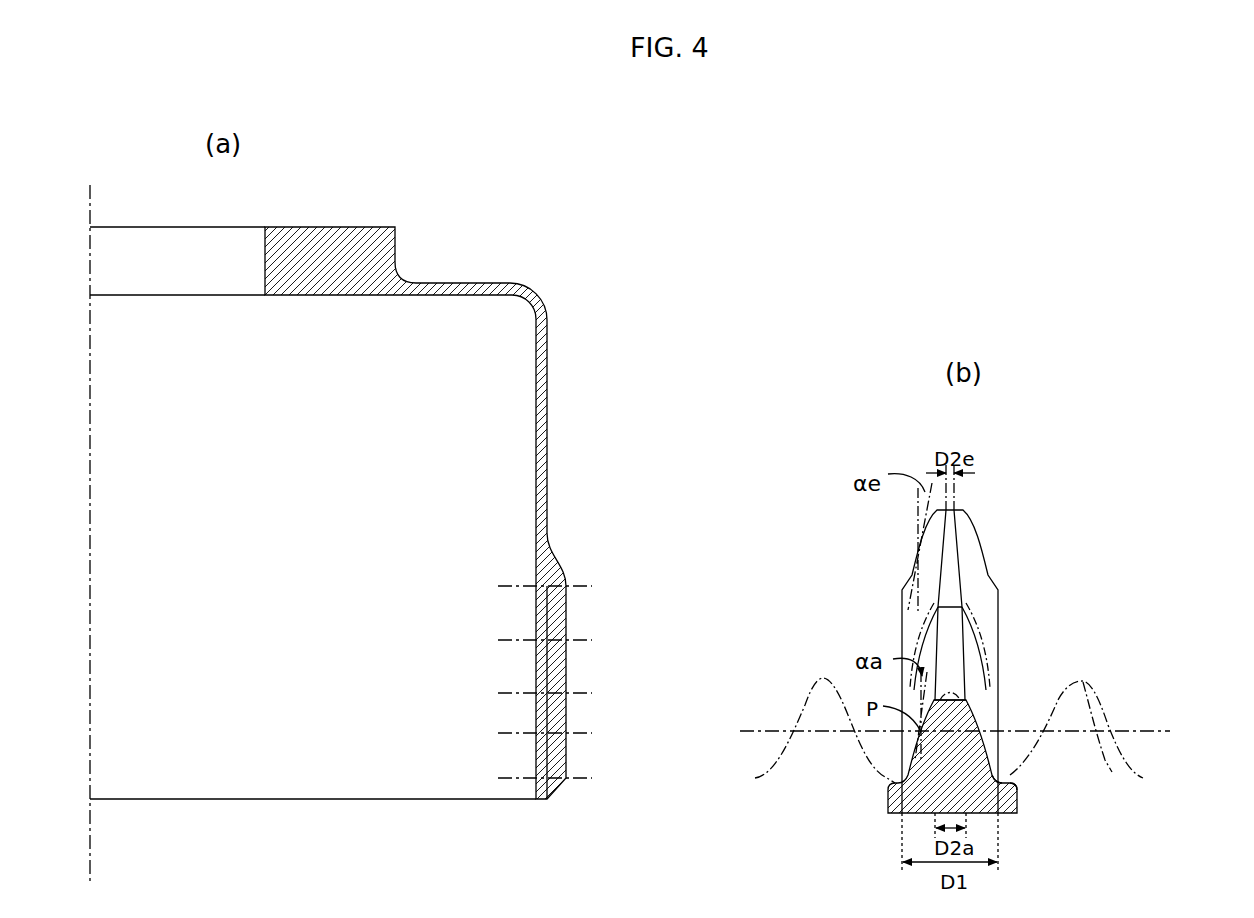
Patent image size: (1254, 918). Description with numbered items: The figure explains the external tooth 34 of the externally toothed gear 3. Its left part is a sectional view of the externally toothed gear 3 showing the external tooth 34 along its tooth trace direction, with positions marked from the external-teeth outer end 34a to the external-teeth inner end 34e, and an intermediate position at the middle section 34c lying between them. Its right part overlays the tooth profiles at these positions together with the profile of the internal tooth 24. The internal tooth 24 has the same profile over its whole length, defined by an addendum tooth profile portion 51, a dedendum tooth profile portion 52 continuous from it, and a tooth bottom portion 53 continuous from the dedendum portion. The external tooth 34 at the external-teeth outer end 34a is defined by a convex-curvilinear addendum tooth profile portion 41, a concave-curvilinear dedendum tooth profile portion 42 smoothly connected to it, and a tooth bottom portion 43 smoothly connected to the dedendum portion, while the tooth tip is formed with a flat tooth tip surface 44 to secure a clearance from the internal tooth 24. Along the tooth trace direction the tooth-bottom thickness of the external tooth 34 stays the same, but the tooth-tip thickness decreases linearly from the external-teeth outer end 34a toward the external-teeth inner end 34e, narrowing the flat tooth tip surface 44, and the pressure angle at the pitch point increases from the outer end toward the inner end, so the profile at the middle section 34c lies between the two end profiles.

The externally toothed gear 3 is at (464, 260).
The external tooth 34 is at (584, 662).
The external-teeth inner end 34e is at (568, 584).
The tooth middle portion (section C) 34c is at (985, 680).
The external-teeth outer end 34a is at (567, 780).
The flat tooth tip surface 44 is at (962, 692).
The convex-curvilinear addendum tooth profile portion 41 is at (984, 706).
The concave-curvilinear dedendum tooth profile portion 42 is at (993, 765).
The tooth bottom portion 43 is at (1020, 778).
The addendum tooth profile portion 51 is at (1045, 760).
The dedendum tooth profile portion 52 is at (1102, 737).
The tooth bottom portion 53 is at (1112, 760).
The internal tooth 24 is at (1060, 758).